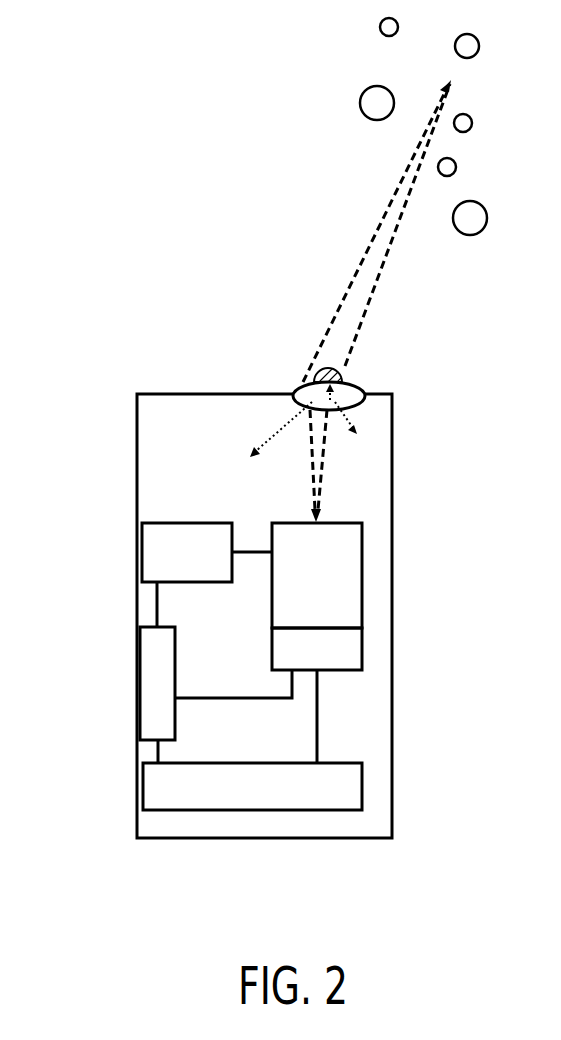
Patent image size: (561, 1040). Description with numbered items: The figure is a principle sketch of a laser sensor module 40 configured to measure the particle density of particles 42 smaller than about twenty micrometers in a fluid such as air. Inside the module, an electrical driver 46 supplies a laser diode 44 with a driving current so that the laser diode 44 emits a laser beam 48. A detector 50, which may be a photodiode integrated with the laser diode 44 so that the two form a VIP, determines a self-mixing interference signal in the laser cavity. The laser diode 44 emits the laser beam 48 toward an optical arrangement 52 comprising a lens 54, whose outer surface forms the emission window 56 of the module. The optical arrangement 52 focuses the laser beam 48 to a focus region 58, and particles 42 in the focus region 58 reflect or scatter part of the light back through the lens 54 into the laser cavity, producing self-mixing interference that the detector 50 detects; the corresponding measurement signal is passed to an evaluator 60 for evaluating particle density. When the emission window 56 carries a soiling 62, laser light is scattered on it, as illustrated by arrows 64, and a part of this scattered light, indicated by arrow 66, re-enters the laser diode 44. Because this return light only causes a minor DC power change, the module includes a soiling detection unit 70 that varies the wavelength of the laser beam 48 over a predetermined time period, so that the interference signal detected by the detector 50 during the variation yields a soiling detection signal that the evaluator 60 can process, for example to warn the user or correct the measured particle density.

The laser sensor module 40 is at (116, 521).
The particles 42 is at (477, 220).
The laser diode 44 is at (345, 578).
The electrical driver 46 is at (148, 552).
The laser beam 48 is at (330, 413).
The detector 50 is at (345, 651).
The optical arrangement 52 is at (382, 378).
The lens 54 is at (297, 383).
The emission window 56 is at (357, 381).
The focus region 58 is at (521, 98).
The evaluator 60 is at (163, 783).
The soiling 62 is at (320, 377).
The arrows 64 is at (280, 430).
The arrow 66 is at (322, 507).
The soiling detection unit 70 is at (152, 690).